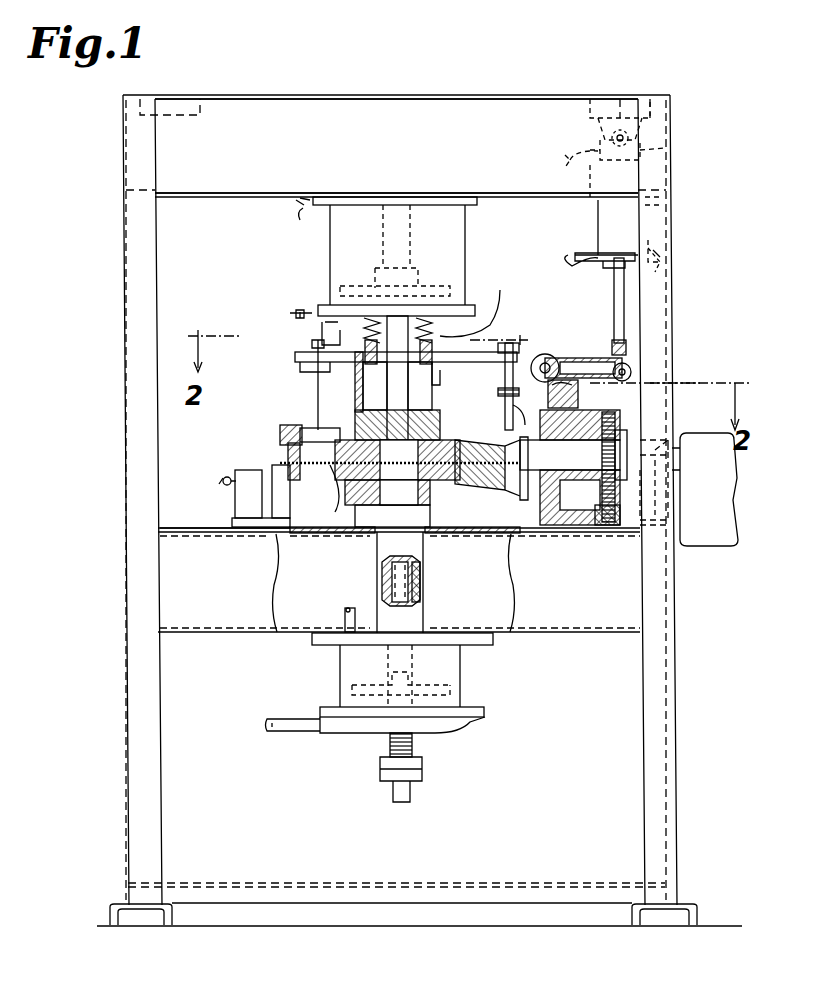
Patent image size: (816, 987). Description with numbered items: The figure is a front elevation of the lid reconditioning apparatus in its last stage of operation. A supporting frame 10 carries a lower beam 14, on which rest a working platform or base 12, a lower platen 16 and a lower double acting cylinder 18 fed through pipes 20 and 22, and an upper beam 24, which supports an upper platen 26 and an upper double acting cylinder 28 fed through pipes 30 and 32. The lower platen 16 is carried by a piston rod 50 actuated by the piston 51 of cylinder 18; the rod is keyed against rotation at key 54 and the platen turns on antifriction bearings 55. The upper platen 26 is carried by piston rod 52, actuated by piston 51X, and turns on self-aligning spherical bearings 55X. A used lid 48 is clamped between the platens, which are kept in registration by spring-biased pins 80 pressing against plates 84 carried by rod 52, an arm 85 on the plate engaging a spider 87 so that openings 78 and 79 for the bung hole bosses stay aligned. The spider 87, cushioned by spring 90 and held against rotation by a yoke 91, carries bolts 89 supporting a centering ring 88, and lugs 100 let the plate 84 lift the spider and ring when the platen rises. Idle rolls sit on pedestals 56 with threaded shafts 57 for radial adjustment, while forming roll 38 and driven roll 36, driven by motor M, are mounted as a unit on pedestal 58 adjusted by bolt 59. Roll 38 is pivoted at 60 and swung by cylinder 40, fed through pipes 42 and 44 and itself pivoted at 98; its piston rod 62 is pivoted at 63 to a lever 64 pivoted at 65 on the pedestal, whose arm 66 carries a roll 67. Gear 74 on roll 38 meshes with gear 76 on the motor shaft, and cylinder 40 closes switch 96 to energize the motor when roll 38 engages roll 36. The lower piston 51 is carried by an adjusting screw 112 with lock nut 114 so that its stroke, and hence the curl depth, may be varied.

The supporting frame 10 is at (130, 494).
The working platform or base 12 is at (196, 528).
The lower beam 14 is at (399, 579).
The lower platen 16 is at (340, 508).
The actuating double acting cylinder 18 is at (402, 675).
The pipe 20 is at (343, 615).
The pipe 22 is at (292, 726).
The upper beam 24 is at (396, 146).
The upper platen 26 is at (290, 455).
The actuating double acting cylinder 28 is at (395, 256).
The pipe 30 is at (300, 220).
The pipe 32 is at (300, 310).
The driven roll 36 is at (518, 532).
The forming roll 38 is at (505, 425).
The double acting cylinder 40 is at (617, 229).
The pipe 42 is at (565, 157).
The pipe 44 is at (575, 255).
The used lid 48 is at (282, 470).
The piston rod 50 is at (385, 582).
The piston 51 is at (460, 676).
The piston 51X is at (401, 250).
The piston rod 52 is at (398, 378).
The key 54 is at (425, 590).
The antifriction bearings 55 is at (478, 488).
The spherical bearings 55X is at (419, 417).
The pedestal 56 is at (250, 520).
The shaft 57 is at (225, 478).
The pedestal 58 is at (560, 527).
The adjustment bolt 59 is at (672, 432).
The pivot 60 is at (618, 452).
The piston rod 62 is at (614, 293).
The pivot 63 is at (630, 368).
The lever 64 is at (592, 362).
The pivot 65 is at (545, 360).
The arm 66 is at (578, 396).
The roll 67 is at (504, 398).
The gear 74 is at (625, 438).
The gear 76 is at (606, 526).
The opening 78 is at (305, 430).
The opening 79 is at (319, 490).
The pins 80 is at (397, 386).
The plate 84 is at (360, 425).
The arm 85 is at (352, 383).
The spider 87 is at (318, 348).
The centering ring 88 is at (282, 432).
The bolts 89 is at (305, 388).
The spring 90 is at (476, 303).
The yoke 91 is at (325, 332).
The switch 96 is at (665, 260).
The pivot 98 is at (668, 150).
The lugs 100 is at (434, 387).
The adjusting screw 112 is at (414, 742).
The lock nut 114 is at (424, 768).